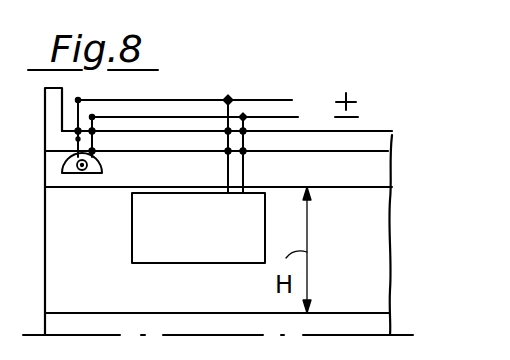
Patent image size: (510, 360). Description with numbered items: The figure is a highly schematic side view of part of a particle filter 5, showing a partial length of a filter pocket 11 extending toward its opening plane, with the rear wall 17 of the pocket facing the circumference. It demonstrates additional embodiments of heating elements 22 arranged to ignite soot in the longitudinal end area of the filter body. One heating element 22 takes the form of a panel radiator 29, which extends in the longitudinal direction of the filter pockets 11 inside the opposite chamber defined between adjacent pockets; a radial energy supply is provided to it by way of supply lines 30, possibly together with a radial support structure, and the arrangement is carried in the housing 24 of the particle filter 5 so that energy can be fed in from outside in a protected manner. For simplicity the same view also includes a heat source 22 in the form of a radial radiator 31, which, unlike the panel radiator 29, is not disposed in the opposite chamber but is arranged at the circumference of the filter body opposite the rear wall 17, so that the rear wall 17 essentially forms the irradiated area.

The particle filter 5 is at (391, 109).
The filter pocket 11 is at (362, 242).
The rear wall 17 is at (277, 180).
The radiation heating element 22 is at (116, 253).
The housing 24 is at (378, 141).
The panel radiator 29 is at (252, 228).
The supply lines 30 is at (160, 115).
The radial radiator 31 is at (106, 163).